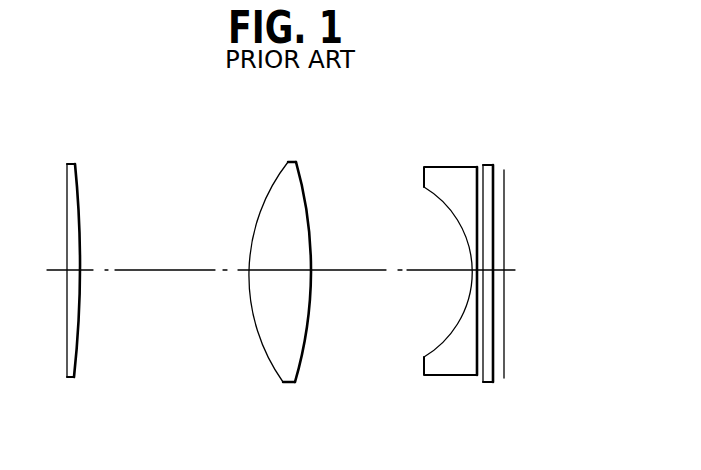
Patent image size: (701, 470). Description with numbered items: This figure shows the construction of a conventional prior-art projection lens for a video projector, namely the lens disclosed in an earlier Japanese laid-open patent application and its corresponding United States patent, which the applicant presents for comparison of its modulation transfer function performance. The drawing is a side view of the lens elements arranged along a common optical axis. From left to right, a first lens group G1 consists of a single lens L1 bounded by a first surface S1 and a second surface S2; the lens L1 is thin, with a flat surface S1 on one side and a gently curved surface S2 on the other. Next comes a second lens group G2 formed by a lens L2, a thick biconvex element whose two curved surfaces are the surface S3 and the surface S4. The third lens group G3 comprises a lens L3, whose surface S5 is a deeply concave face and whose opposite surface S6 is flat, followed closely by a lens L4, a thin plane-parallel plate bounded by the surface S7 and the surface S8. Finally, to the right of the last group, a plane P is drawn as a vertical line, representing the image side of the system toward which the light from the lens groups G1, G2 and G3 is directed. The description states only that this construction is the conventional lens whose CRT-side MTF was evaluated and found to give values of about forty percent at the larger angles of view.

The first lens group G1 is at (70, 163).
The first lens L1 is at (78, 182).
The first surface of first lens S1 is at (67, 227).
The second surface of first lens S2 is at (80, 222).
The second lens group G2 is at (290, 162).
The second lens L2 is at (303, 185).
The first surface of second lens S3 is at (262, 212).
The second surface of second lens S4 is at (308, 212).
The third lens group G3 is at (469, 163).
The third lens L3 is at (430, 165).
The concave surface of third lens S5 is at (465, 235).
The flat surface of third lens S6 is at (477, 205).
The fourth lens (plane parallel plate) L4 is at (492, 162).
The first surface of fourth lens S7 is at (483, 217).
The second surface of fourth lens S8 is at (493, 242).
The image plane P is at (503, 302).